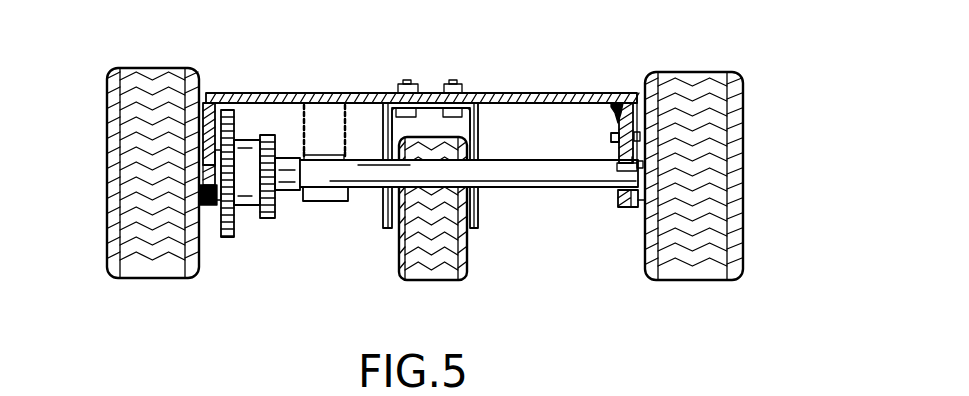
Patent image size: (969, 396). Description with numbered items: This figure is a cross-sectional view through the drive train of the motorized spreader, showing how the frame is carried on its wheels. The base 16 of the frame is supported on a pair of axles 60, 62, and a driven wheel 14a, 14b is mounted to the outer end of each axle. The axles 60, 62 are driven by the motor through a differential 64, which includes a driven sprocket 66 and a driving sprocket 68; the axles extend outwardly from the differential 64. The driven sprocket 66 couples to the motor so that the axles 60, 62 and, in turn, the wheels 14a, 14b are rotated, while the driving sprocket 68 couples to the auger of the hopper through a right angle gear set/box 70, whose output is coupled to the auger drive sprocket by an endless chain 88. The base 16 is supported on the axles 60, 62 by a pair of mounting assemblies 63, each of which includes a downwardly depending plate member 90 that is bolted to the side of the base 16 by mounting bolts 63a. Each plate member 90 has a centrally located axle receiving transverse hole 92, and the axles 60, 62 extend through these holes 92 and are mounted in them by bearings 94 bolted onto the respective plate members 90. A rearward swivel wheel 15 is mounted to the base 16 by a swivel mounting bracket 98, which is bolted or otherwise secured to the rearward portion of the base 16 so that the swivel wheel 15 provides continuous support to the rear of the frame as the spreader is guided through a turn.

The driven wheel 14a is at (158, 74).
The driven wheel 14b is at (700, 78).
The swivel wheel 15 is at (438, 268).
The base 16 is at (538, 97).
The axle 60 is at (187, 270).
The axle 62 is at (530, 193).
The mounting assembly 63 is at (616, 100).
The mounting bolt 63a is at (639, 137).
The differential 64 is at (248, 220).
The driven sprocket 66 is at (236, 130).
The driving sprocket 68 is at (275, 125).
The gear set/box 70 is at (323, 208).
The endless chain 88 is at (363, 97).
The plate member 90 is at (210, 108).
The axle receiving transverse hole 92 is at (623, 165).
The bearing 94 is at (200, 162).
The swivel mounting bracket 98 is at (495, 110).